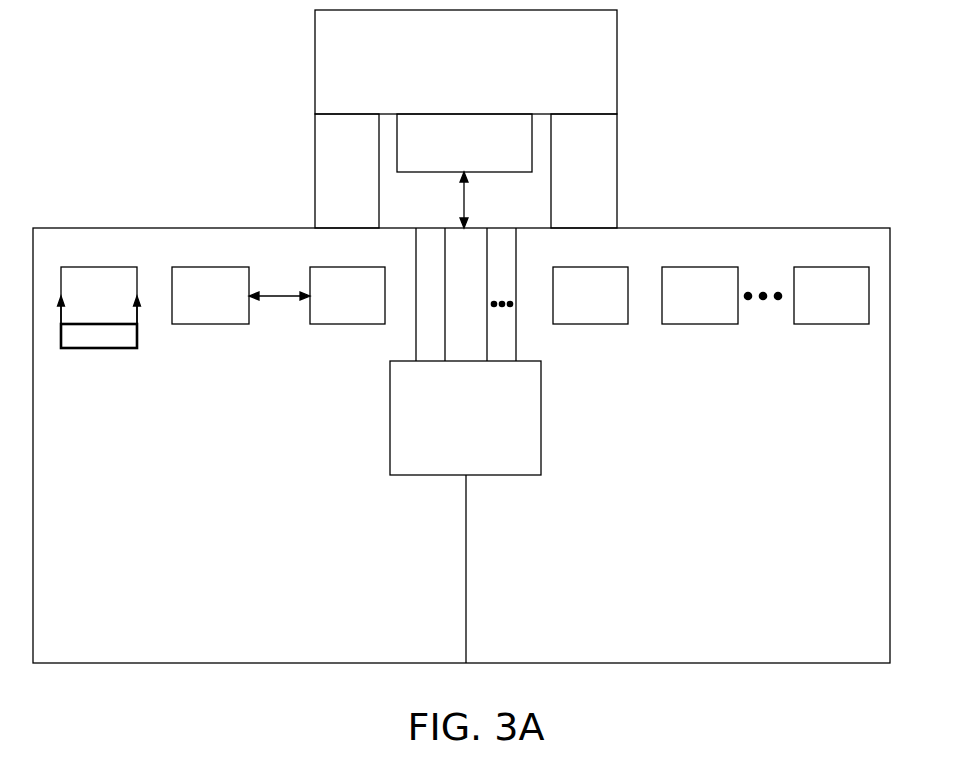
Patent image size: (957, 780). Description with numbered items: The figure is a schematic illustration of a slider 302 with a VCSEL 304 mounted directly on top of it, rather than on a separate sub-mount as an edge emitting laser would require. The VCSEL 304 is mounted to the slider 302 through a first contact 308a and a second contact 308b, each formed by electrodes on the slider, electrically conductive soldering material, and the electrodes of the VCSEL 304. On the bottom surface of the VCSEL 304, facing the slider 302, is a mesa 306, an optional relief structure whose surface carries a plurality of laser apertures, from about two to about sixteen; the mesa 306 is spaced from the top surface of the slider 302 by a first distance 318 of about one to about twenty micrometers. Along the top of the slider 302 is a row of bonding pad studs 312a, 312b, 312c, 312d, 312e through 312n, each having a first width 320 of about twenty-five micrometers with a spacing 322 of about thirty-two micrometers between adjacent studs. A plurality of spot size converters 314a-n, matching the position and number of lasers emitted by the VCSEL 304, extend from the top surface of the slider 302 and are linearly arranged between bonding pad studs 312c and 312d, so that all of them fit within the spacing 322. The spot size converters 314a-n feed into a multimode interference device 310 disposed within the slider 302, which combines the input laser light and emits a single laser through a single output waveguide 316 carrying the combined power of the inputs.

The slider 302 is at (117, 663).
The VCSEL 304 is at (486, 72).
The mesa 306 is at (486, 153).
The first contact 308a is at (319, 185).
The second contact 308b is at (610, 185).
The multimode interference (MMI) device 310 is at (486, 430).
The bonding pad stud 312a is at (125, 308).
The bonding pad stud 312b is at (237, 308).
The bonding pad stud 312c is at (373, 308).
The bonding pad stud 312d is at (616, 308).
The bonding pad stud 312e is at (726, 308).
The bonding pad stud 312n is at (857, 308).
The spot size converters 314a-n is at (416, 338).
The single output waveguide 316 is at (466, 567).
The first distance 318 is at (438, 210).
The first width 320 is at (100, 348).
The spacing 322 is at (277, 300).